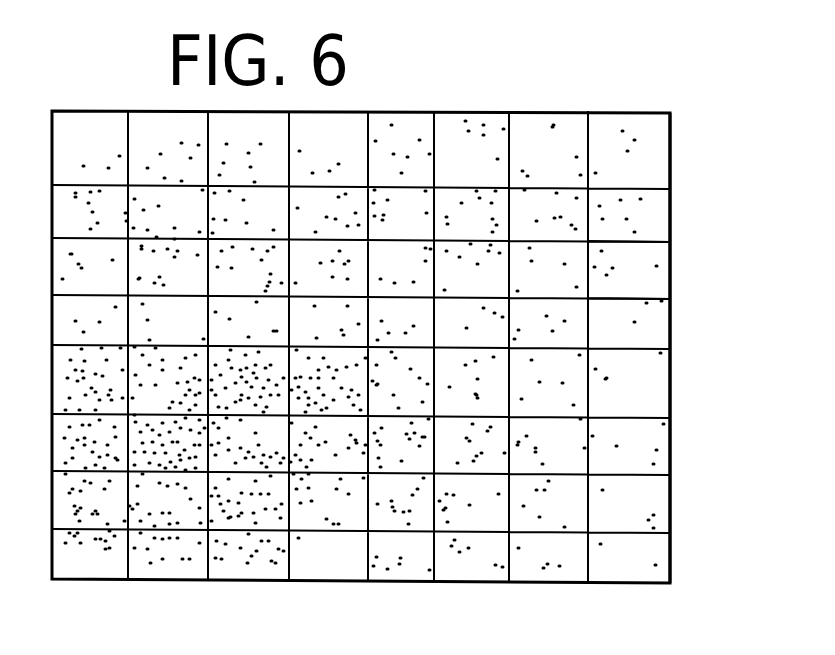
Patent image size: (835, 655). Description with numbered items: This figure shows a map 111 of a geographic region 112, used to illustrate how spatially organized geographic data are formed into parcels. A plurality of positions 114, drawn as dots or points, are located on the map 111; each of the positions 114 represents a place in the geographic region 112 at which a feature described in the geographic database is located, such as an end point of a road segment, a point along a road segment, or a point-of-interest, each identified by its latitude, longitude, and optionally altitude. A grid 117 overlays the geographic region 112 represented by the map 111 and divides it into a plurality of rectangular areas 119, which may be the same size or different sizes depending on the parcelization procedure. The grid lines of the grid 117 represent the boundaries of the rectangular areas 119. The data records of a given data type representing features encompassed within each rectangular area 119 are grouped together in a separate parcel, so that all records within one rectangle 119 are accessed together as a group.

The map 111 is at (708, 335).
The geographic region 112 is at (633, 205).
The grid 117 is at (681, 486).
The rectangular area 119 is at (648, 521).
The positions 114 is at (163, 557).